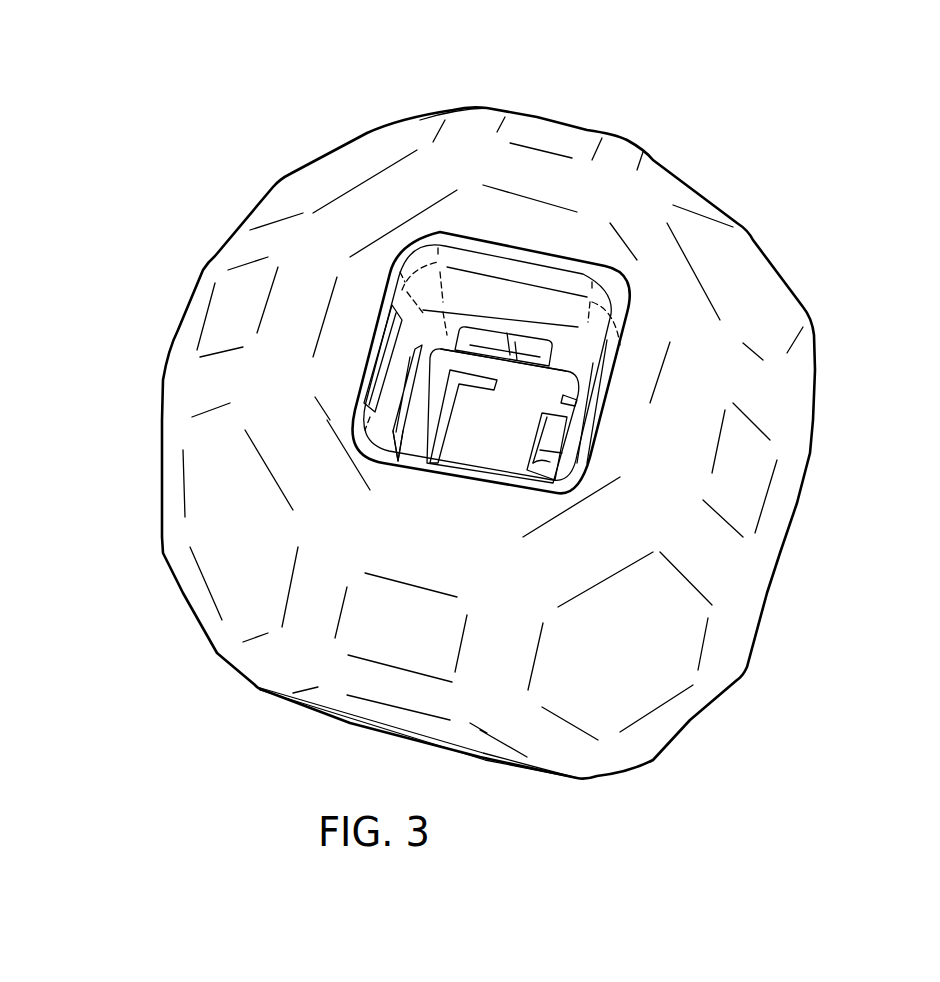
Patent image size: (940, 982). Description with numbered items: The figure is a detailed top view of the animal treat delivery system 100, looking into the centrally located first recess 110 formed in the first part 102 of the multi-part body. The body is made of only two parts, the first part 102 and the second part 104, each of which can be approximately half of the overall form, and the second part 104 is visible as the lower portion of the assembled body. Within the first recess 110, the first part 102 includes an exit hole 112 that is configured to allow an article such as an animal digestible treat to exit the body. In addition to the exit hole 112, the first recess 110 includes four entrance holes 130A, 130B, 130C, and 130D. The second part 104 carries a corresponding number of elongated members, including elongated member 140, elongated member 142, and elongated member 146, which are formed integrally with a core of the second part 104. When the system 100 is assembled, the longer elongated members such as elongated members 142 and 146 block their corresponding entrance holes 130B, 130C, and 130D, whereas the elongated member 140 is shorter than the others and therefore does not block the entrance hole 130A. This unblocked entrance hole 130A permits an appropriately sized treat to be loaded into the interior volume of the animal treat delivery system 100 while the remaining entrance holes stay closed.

The animal treat delivery system 100 is at (833, 126).
The first part 102 is at (473, 133).
The second part 104 is at (288, 710).
The first recess 110 is at (593, 320).
The exit hole 112 is at (383, 342).
The entrance hole 130A is at (532, 347).
The entrance hole 130B is at (529, 428).
The entrance hole 130C is at (485, 460).
The entrance hole 130D is at (413, 399).
The elongated member 140 is at (498, 345).
The elongated member 142 is at (550, 462).
The elongated member 146 is at (493, 530).